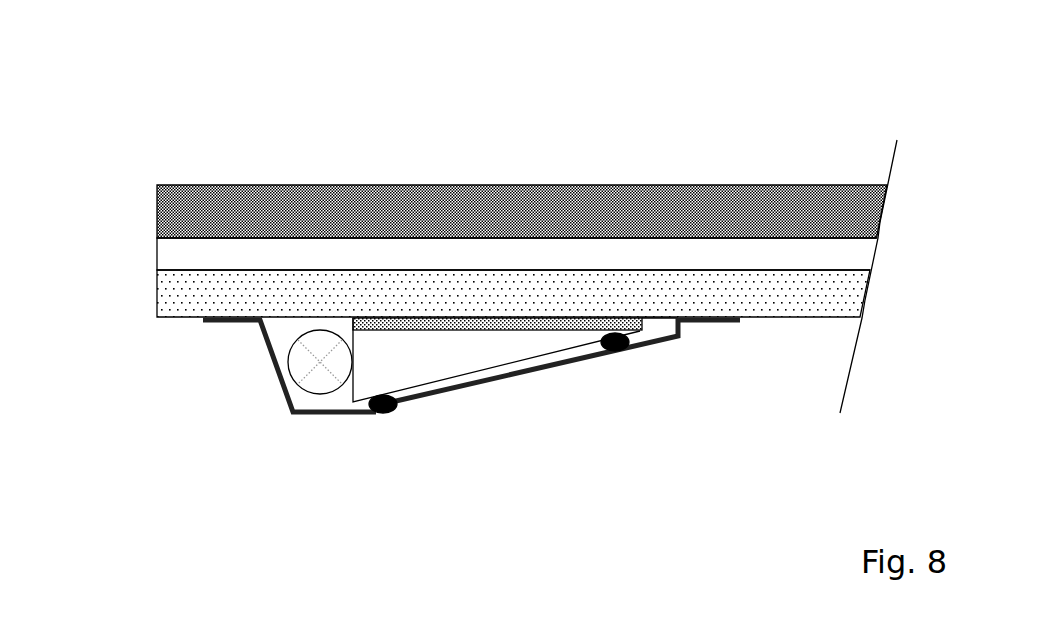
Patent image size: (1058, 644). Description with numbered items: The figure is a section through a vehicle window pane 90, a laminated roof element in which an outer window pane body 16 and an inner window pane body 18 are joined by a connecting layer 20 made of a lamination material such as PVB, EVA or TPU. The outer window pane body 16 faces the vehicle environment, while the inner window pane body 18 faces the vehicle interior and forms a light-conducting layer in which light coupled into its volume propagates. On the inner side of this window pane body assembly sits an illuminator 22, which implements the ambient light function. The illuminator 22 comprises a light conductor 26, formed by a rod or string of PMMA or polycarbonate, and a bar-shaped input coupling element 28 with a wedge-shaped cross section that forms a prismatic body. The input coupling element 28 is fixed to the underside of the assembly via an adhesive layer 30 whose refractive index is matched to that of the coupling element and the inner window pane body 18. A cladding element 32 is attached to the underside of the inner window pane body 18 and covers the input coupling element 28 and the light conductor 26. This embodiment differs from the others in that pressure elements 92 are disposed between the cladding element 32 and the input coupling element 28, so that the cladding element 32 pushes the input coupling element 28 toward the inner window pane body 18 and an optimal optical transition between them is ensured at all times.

The outer window pane body 16 is at (213, 207).
The inner window pane body 18 is at (172, 288).
The connecting layer 20 is at (165, 243).
The illuminator 22 is at (534, 386).
The light conductor 26 is at (322, 382).
The input coupling element 28 is at (437, 370).
The adhesive layer 30 is at (583, 323).
The cladding element 32 is at (497, 383).
The vehicle window pane 90 is at (777, 73).
The pressure element 92 is at (384, 412).